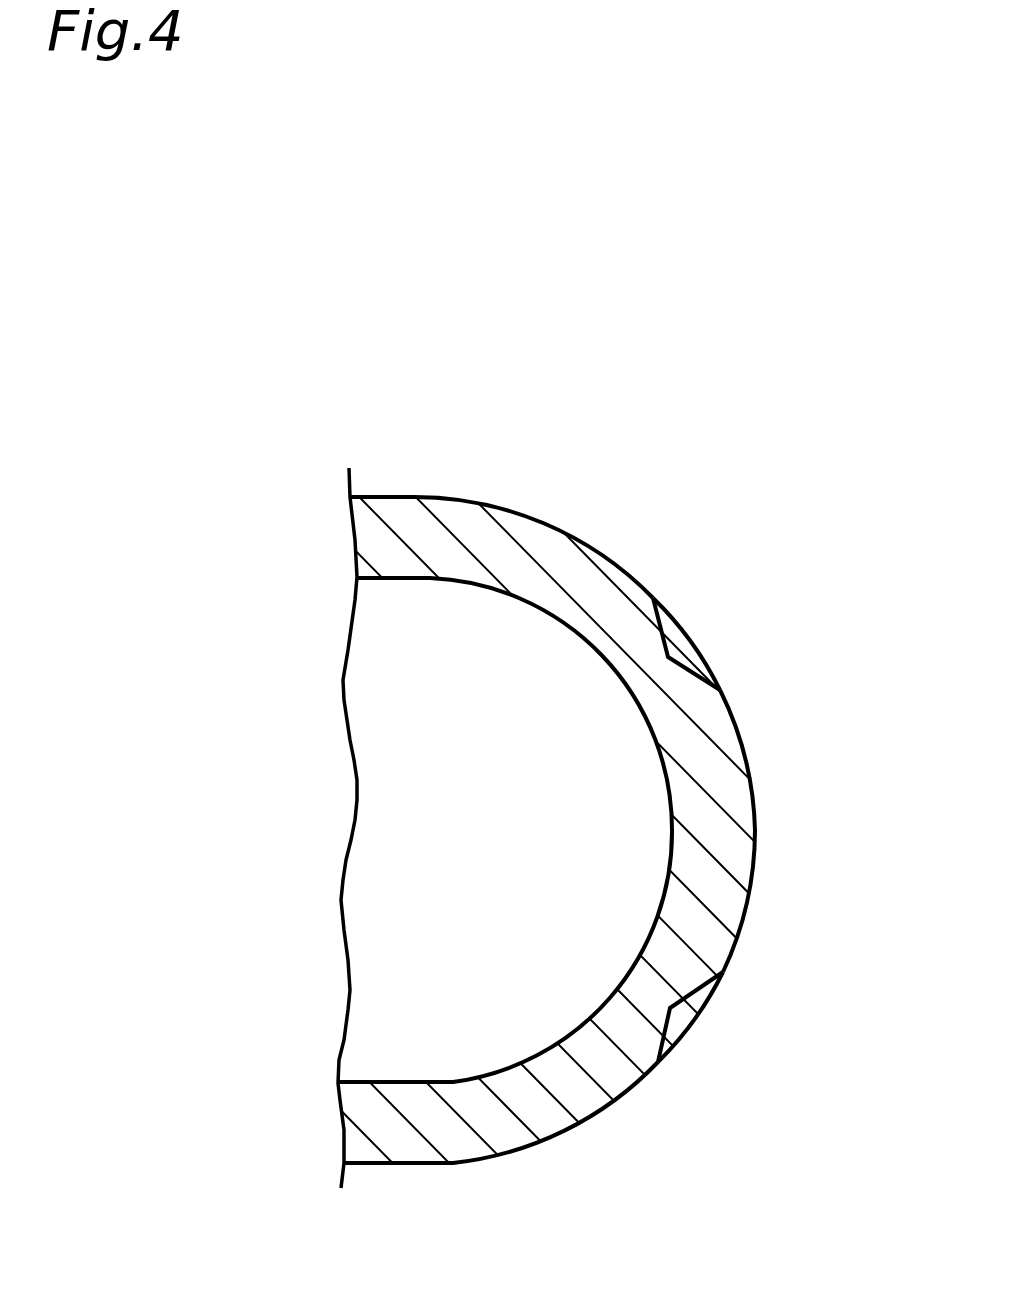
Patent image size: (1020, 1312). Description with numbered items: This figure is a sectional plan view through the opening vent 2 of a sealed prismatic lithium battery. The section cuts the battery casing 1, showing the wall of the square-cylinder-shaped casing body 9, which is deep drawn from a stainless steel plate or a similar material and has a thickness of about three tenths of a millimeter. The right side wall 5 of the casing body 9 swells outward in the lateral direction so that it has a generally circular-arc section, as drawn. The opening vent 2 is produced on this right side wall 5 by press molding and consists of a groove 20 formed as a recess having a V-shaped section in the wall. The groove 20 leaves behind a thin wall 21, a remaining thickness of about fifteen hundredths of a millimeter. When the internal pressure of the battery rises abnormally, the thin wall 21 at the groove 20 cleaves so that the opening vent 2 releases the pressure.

The battery casing 1 is at (573, 1167).
The casing body 9 is at (428, 474).
The right side wall 5 is at (755, 802).
The groove 20 is at (697, 670).
The opening vent 2 is at (727, 600).
The thin wall 21 is at (652, 662).